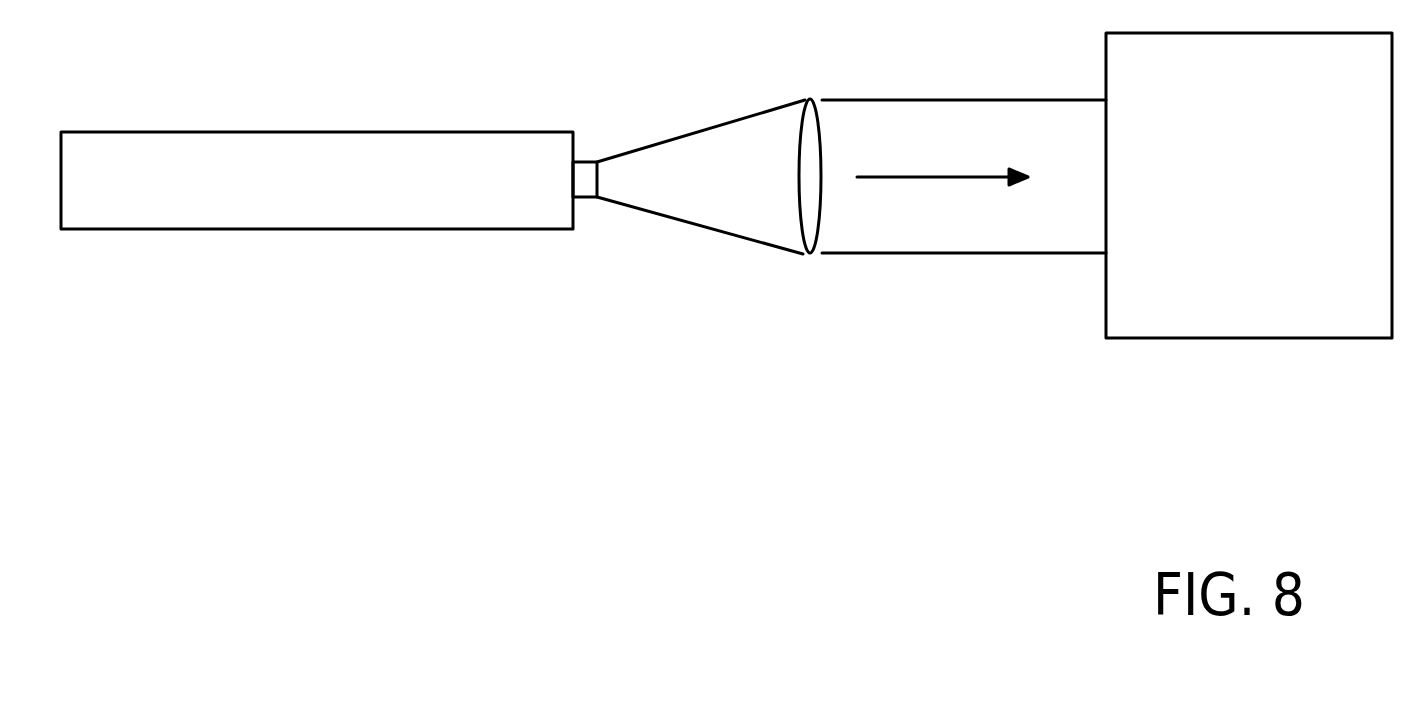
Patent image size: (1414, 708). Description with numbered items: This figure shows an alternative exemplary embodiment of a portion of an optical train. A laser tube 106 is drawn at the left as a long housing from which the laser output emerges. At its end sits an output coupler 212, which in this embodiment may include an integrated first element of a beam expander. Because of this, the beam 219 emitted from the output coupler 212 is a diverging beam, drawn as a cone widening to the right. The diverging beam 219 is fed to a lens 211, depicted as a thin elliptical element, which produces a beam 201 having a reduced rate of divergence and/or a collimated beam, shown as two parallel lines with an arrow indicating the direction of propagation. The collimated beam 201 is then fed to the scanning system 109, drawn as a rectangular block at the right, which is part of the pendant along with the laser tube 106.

The laser tube 106 is at (135, 216).
The output coupler 212 is at (580, 176).
The diverging beam 219 is at (698, 165).
The lens 211 is at (812, 150).
The collimated beam 201 is at (891, 229).
The scanning system 109 is at (1193, 290).